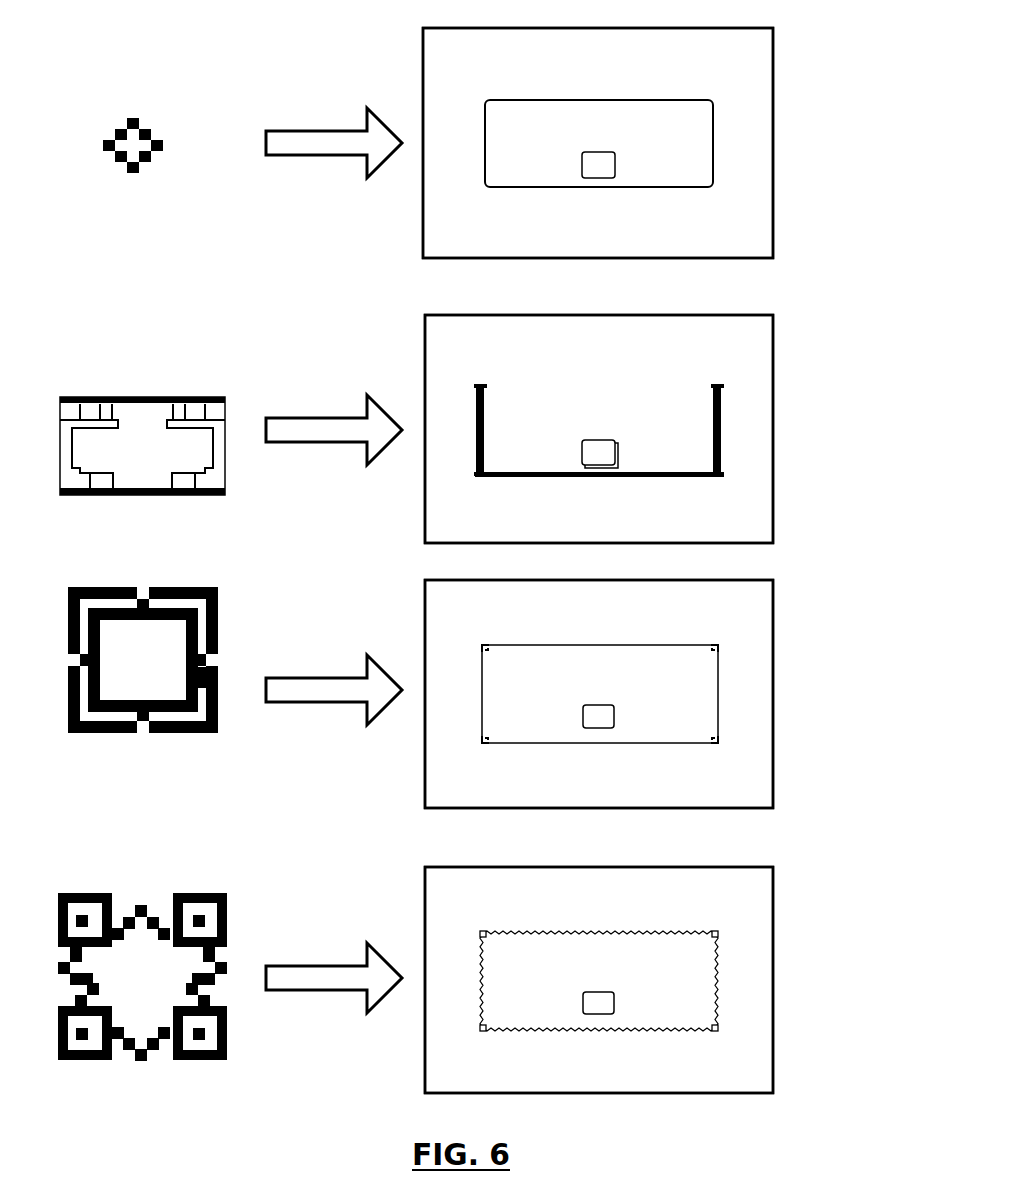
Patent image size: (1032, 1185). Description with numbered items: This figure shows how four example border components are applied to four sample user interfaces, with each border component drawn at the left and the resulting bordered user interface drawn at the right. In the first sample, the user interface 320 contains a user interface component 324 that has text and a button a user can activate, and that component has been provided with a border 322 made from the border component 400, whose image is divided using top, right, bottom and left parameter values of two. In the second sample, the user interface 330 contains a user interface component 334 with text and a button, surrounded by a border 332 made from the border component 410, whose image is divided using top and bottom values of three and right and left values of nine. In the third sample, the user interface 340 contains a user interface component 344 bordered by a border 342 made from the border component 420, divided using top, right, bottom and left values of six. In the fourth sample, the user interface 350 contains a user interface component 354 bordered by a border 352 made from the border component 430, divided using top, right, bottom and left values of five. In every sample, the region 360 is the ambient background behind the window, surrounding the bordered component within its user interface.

The border component 400 is at (127, 115).
The border component 410 is at (132, 395).
The border component 420 is at (148, 587).
The border component 430 is at (183, 893).
The user interface 320 is at (763, 60).
The border 322 is at (715, 115).
The user interface component 324 is at (700, 157).
The user interface 330 is at (763, 347).
The border 332 is at (713, 405).
The user interface component 334 is at (703, 443).
The user interface 340 is at (767, 610).
The border 342 is at (718, 668).
The user interface component 344 is at (703, 707).
The user interface 350 is at (763, 903).
The border 352 is at (717, 960).
The user interface component 354 is at (703, 1002).
The region 360 is at (772, 211).